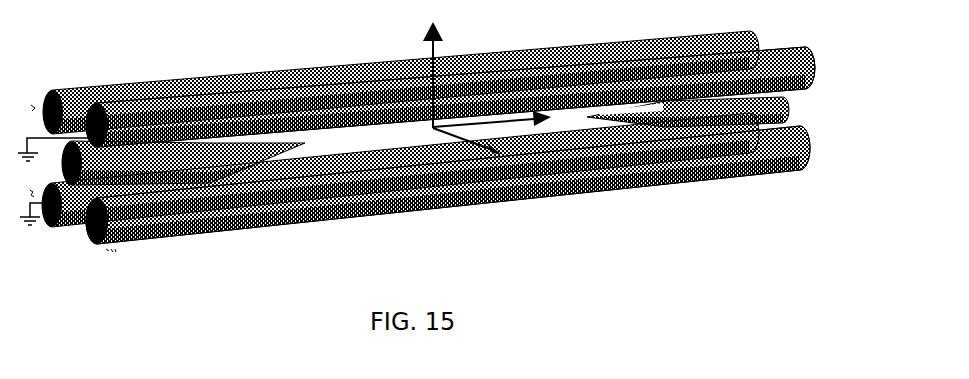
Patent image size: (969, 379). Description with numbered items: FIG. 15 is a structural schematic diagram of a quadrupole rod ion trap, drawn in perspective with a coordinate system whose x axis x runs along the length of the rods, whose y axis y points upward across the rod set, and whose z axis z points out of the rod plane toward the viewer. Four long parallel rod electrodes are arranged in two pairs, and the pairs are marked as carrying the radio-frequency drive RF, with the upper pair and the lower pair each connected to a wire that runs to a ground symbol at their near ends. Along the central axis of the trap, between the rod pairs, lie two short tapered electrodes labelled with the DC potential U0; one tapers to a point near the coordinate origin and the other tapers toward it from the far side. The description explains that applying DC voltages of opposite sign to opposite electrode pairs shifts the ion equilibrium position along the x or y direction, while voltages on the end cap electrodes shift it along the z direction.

The RF electrode rods RF is at (416, 141).
The DC (U0) tapered axial electrodes U0 is at (425, 138).
The x direction x is at (498, 119).
The y direction y is at (436, 72).
The z direction z is at (472, 141).